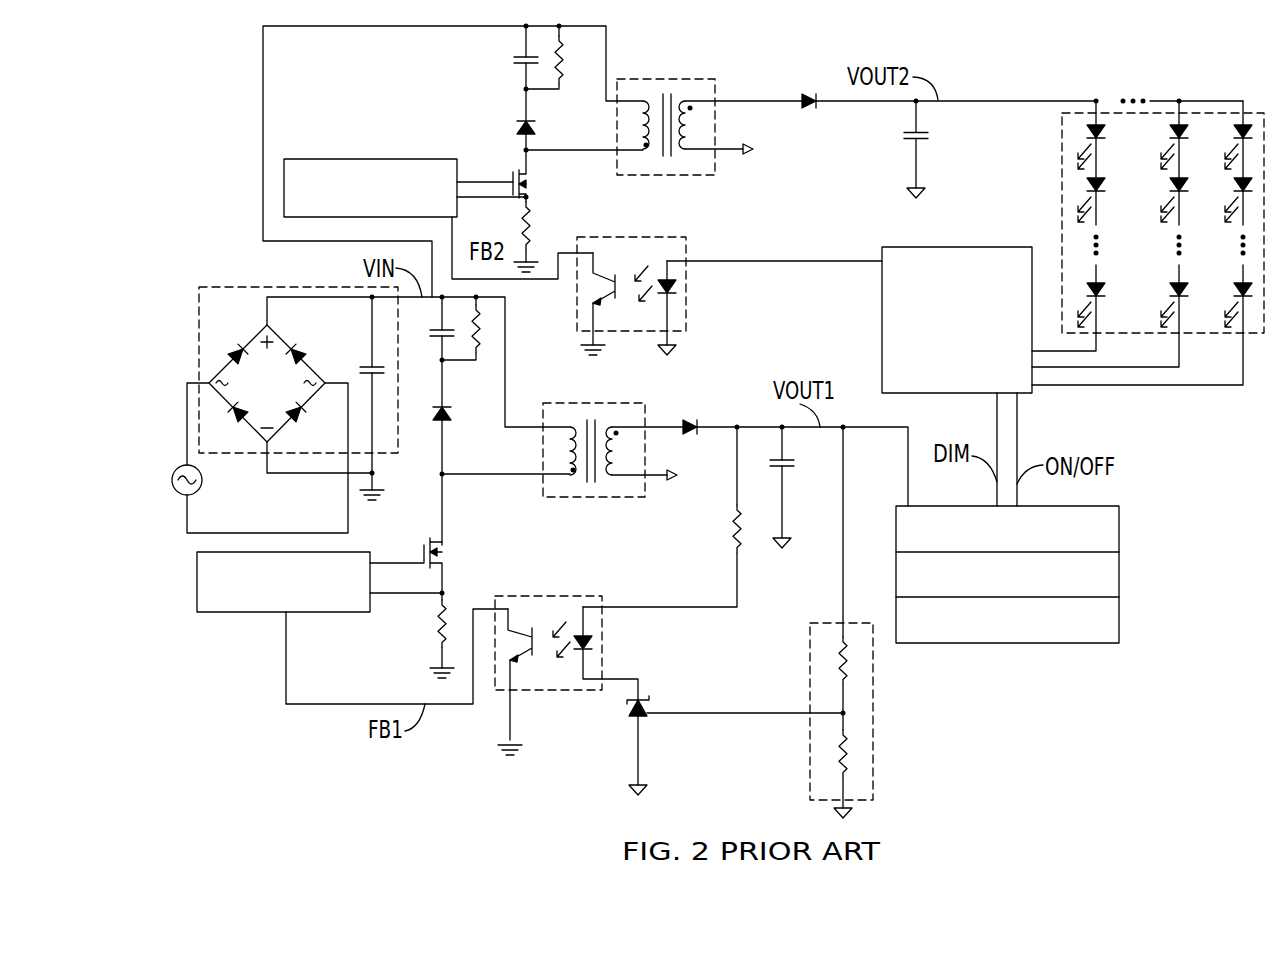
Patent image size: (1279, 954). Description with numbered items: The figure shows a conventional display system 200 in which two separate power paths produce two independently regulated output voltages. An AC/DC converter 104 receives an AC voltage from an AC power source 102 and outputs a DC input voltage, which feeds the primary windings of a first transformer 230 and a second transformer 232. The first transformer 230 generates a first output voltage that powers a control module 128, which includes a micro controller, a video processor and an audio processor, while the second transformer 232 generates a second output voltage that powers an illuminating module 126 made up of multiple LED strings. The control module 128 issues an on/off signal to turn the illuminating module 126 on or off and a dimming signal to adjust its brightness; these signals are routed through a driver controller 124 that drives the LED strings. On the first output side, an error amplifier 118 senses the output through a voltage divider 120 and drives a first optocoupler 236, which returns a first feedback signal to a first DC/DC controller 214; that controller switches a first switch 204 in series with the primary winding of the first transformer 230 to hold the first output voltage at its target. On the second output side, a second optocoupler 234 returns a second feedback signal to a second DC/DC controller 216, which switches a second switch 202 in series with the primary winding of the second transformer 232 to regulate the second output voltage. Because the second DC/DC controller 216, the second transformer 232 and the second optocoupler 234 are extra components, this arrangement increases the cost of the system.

The conventional display system 200 is at (232, 128).
The AC power source 102 is at (198, 494).
The AC/DC converter 104 is at (280, 287).
The error amplifier 118 is at (648, 700).
The voltage divider 120 is at (810, 677).
The driver controller 124 is at (943, 247).
The illuminating module 126 is at (1062, 148).
The control module 128 is at (1120, 534).
The second switch 202 is at (510, 170).
The first switch 204 is at (426, 556).
The first DC/DC controller 214 is at (257, 612).
The second DC/DC controller 216 is at (407, 159).
The first transformer 230 is at (620, 403).
The second transformer 232 is at (673, 79).
The second optocoupler 234 is at (648, 237).
The first optocoupler 236 is at (555, 596).